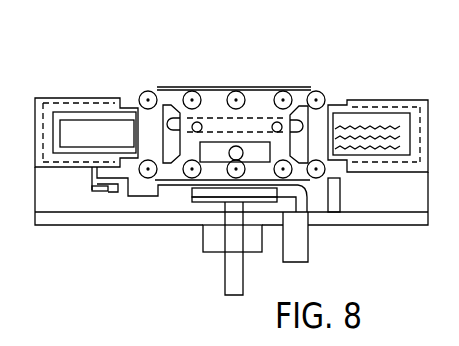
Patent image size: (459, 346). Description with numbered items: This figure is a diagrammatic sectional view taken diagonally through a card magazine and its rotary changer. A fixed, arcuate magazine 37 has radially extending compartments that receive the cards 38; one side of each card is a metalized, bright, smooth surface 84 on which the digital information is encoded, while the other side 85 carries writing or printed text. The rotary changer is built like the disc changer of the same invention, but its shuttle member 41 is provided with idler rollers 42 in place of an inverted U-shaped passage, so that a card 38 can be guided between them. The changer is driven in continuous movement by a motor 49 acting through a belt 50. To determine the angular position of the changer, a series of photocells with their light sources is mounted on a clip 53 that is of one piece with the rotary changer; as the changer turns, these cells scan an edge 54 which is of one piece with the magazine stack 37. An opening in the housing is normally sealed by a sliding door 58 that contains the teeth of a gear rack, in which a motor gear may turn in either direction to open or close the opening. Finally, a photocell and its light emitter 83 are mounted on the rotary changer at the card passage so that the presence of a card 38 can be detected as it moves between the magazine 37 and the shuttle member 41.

The fixed magazine 37 is at (37, 98).
The card 38 is at (128, 108).
The shuttle member 41 is at (210, 102).
The idler rollers 42 is at (303, 90).
The continuous movement motor 49 is at (292, 254).
The belt 50 is at (300, 187).
The clip 53 is at (134, 196).
The edge 54 is at (93, 186).
The sliding door 58 is at (72, 163).
The photocell and light emitter 83 is at (178, 144).
The metalized surface 84 is at (90, 122).
The other side 85 is at (362, 127).